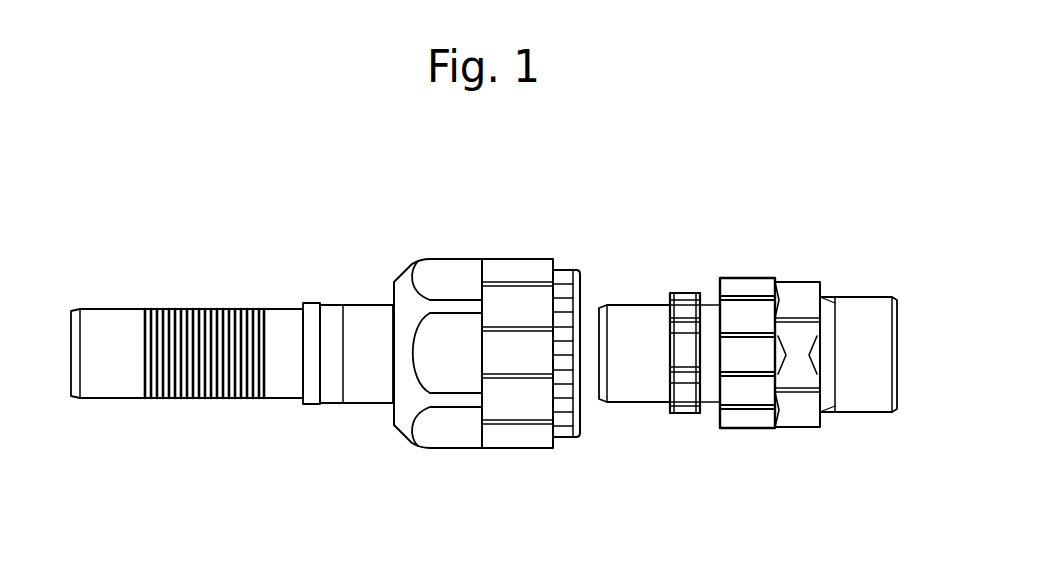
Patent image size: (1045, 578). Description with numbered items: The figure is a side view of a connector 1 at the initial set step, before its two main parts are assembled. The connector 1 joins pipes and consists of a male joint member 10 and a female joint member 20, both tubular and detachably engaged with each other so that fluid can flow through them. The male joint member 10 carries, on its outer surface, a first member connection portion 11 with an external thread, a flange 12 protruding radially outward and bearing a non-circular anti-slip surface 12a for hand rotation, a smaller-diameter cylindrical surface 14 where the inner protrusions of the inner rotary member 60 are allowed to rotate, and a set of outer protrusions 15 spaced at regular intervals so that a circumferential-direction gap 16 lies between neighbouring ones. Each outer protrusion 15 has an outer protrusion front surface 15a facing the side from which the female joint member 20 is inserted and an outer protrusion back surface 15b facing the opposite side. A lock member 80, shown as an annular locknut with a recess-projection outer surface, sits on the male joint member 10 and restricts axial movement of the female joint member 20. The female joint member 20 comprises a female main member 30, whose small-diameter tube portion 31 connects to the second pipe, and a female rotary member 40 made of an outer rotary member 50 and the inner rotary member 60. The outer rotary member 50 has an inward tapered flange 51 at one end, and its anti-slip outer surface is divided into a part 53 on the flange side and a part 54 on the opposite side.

The connector 1 is at (210, 236).
The male joint member 10 is at (890, 280).
The first member connection portion 11 is at (867, 297).
The flange 12 is at (813, 283).
The anti-slip surface 12a is at (788, 285).
The cylindrical surface 14 is at (640, 305).
The outer protrusions 15 is at (685, 318).
The outer protrusion front surface 15a is at (673, 410).
The outer protrusion back surface 15b is at (708, 410).
The circumferential-direction gap 16 is at (697, 350).
The female joint member 20 is at (360, 275).
The female main member 30 is at (290, 303).
The small-diameter tube portion 31 is at (272, 398).
The female rotary member 40 is at (603, 183).
The outer rotary member 50 is at (520, 258).
The flange 51 is at (395, 282).
The outer circumferential surface part 53 is at (460, 435).
The outer circumferential surface part 54 is at (522, 433).
The inner rotary member 60 is at (568, 268).
The lock member 80 is at (757, 268).